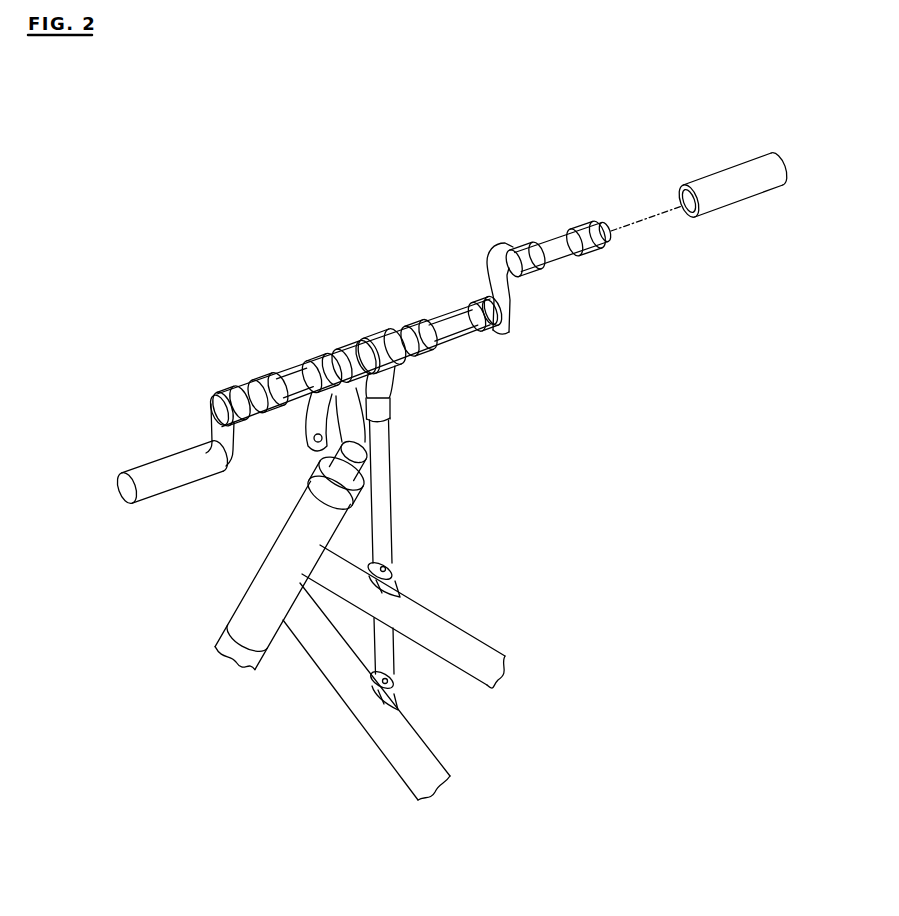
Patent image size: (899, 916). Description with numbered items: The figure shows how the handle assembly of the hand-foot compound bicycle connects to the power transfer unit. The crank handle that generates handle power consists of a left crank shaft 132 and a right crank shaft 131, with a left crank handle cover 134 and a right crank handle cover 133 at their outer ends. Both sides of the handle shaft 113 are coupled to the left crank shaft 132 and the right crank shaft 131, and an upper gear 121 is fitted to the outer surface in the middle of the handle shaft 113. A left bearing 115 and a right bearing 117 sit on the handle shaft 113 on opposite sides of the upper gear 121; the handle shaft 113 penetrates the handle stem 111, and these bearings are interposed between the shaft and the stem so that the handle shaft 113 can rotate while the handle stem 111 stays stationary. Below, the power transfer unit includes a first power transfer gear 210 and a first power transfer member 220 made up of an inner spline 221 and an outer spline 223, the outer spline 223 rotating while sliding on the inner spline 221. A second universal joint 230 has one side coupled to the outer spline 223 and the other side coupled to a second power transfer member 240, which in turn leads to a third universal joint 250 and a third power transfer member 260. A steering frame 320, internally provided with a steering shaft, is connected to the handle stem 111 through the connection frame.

The handle stem 111 is at (430, 313).
The handle shaft 113 is at (337, 352).
The left bearing 115 is at (307, 360).
The right bearing 117 is at (477, 330).
The upper gear 121 is at (362, 344).
The right crank shaft 131 is at (500, 297).
The left crank shaft 132 is at (212, 408).
The right crank handle cover 133 is at (729, 197).
The left crank handle cover 134 is at (171, 478).
The first power transfer gear 210 is at (399, 383).
The first power transfer member 220 is at (440, 536).
The inner spline 221 is at (388, 419).
The outer spline 223 is at (380, 464).
The second universal joint 230 is at (400, 565).
The second power transfer member 240 is at (398, 643).
The third universal joint 250 is at (398, 684).
The third power transfer member 260 is at (397, 695).
The steering frame 320 is at (292, 546).